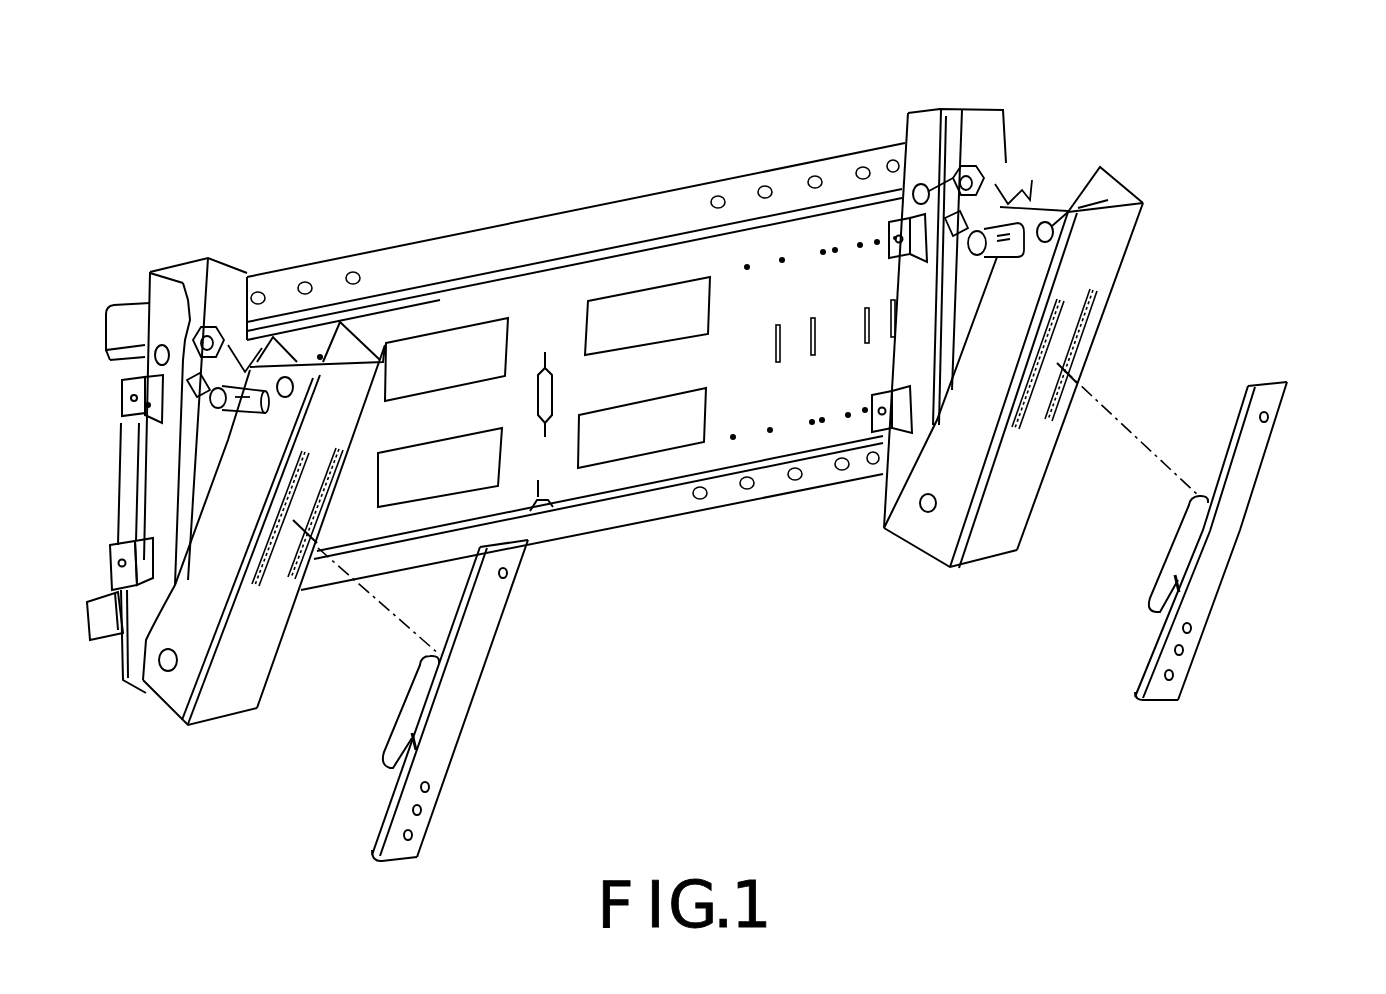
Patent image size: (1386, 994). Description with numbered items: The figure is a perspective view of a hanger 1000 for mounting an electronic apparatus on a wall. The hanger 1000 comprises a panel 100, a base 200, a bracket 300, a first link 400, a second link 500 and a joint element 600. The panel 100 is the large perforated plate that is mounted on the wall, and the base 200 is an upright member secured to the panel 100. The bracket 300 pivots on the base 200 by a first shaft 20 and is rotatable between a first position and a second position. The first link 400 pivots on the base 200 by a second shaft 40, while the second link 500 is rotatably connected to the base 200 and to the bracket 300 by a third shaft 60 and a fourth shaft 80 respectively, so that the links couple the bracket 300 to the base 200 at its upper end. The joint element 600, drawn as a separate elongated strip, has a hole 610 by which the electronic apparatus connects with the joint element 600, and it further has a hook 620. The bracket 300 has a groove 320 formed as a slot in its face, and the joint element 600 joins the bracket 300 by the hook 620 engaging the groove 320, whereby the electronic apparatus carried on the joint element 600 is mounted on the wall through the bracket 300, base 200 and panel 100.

The hanger 1000 is at (210, 73).
The panel 100 is at (631, 225).
The base 200 is at (963, 147).
The bracket 300 is at (1117, 243).
The groove 320 is at (1082, 334).
The first link 400 is at (972, 170).
The second link 500 is at (1015, 195).
The third shaft 60 is at (968, 245).
The second shaft 40 is at (913, 195).
The fourth shaft 80 is at (1110, 173).
The first shaft 20 is at (926, 504).
The joint element 600 is at (1227, 540).
The hole 610 is at (1193, 631).
The hook 620 is at (1173, 557).